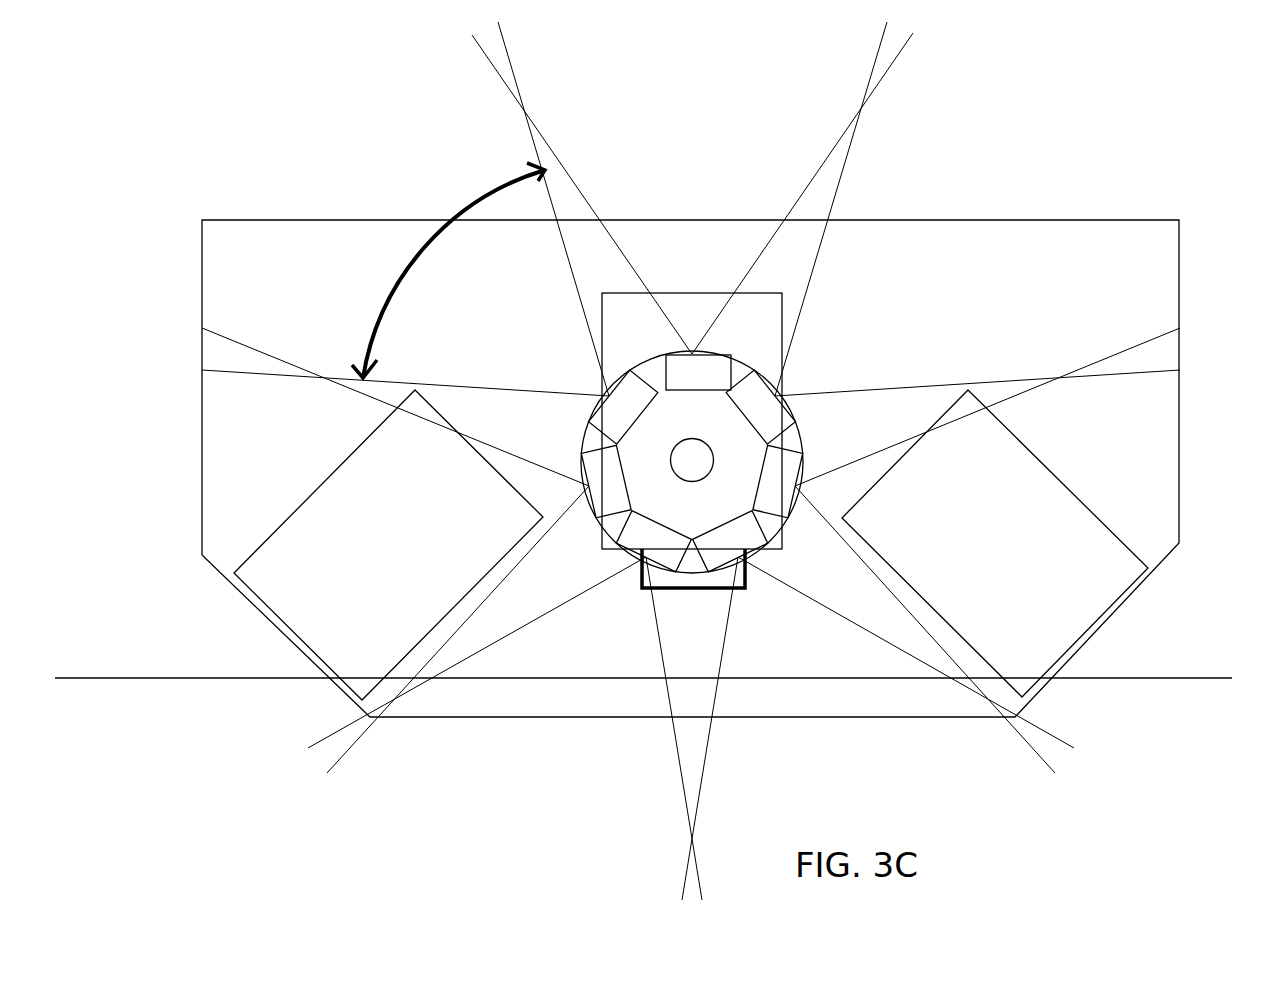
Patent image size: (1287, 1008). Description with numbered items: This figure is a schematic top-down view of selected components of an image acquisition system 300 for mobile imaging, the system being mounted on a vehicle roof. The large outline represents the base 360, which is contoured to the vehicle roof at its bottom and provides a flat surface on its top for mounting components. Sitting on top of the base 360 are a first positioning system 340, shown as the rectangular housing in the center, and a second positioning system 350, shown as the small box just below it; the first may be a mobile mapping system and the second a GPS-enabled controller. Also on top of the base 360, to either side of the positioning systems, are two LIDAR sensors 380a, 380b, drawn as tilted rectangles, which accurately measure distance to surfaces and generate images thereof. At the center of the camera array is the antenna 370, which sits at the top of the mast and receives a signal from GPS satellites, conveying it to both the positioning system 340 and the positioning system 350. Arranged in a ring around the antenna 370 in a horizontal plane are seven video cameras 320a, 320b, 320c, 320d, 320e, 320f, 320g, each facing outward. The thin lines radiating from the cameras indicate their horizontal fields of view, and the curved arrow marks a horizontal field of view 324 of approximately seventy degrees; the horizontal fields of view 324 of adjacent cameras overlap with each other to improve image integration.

The image acquisition system 300 is at (1110, 68).
The horizontal field of view 324 is at (408, 268).
The first positioning system 340 is at (782, 312).
The second positioning system 350 is at (747, 590).
The base 360 is at (1003, 219).
The antenna 370 is at (688, 438).
The video camera 320a is at (697, 352).
The video camera 320b is at (793, 412).
The video camera 320c is at (795, 457).
The video camera 320d is at (767, 547).
The video camera 320e is at (657, 520).
The video camera 320f is at (593, 513).
The video camera 320g is at (593, 414).
The LIDAR sensor 380a is at (1132, 550).
The LIDAR sensor 380b is at (253, 551).